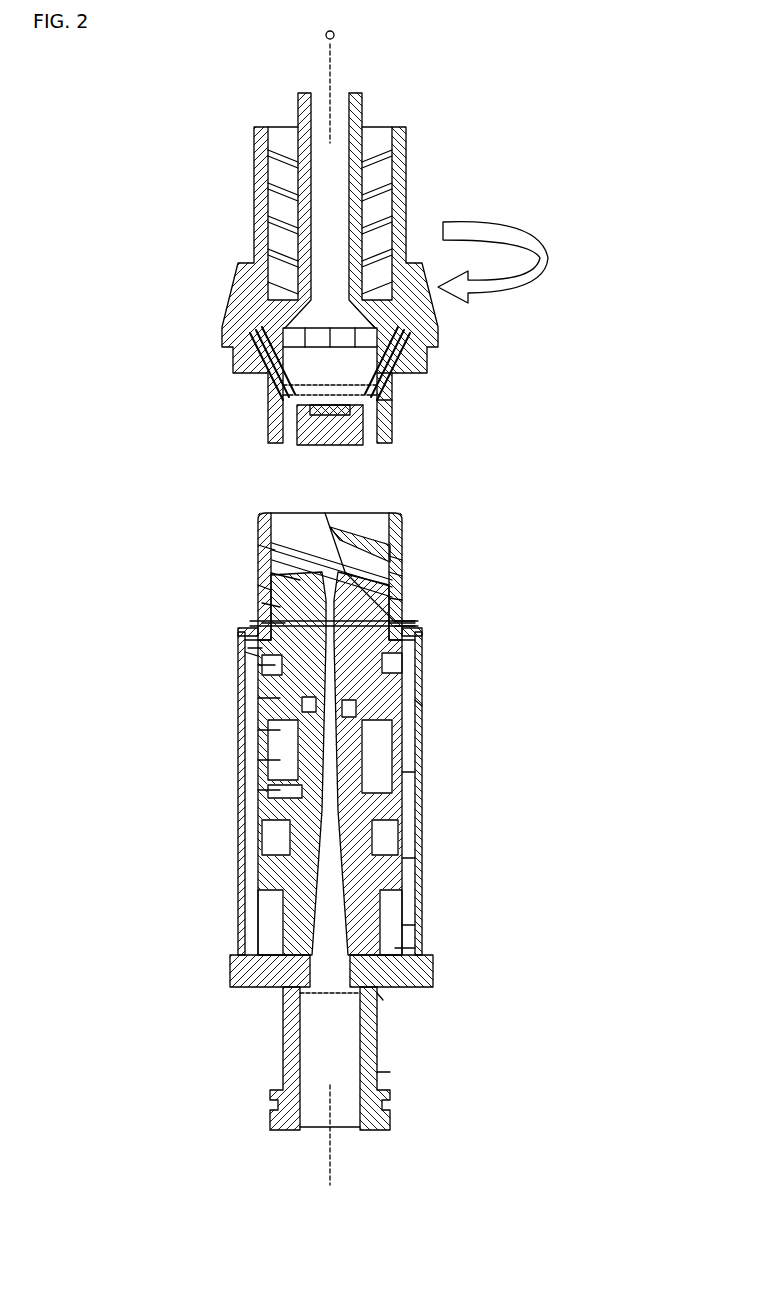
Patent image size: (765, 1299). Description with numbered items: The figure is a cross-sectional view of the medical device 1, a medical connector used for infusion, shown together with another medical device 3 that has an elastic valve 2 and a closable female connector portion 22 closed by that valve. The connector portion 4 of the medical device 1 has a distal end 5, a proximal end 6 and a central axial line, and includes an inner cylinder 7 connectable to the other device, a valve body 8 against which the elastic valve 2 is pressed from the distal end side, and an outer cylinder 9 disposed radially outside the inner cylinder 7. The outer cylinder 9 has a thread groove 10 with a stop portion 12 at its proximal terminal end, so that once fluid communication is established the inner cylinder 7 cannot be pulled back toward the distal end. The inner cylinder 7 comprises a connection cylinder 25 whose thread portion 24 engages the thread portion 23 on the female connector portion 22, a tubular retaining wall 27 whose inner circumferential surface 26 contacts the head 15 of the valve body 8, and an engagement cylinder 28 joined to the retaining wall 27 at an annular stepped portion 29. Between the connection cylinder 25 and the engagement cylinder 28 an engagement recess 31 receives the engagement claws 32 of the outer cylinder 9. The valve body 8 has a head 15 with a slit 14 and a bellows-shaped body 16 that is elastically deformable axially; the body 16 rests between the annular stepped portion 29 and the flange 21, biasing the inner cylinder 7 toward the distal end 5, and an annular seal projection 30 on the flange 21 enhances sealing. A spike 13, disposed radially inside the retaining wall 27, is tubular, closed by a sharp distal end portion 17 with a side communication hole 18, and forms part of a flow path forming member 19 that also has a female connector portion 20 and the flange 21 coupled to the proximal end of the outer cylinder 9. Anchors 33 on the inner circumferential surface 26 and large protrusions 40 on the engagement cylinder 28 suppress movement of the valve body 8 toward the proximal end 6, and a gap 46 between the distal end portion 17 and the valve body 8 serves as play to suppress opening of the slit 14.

The medical device 1 is at (563, 673).
The elastic valve 2 is at (360, 447).
The another medical device 3 is at (500, 179).
The connector portion 4 is at (432, 649).
The distal end 5 is at (380, 516).
The proximal end 6 is at (412, 947).
The inner cylinder 7 is at (408, 573).
The valve body 8 is at (402, 597).
The outer cylinder 9 is at (428, 829).
The thread groove 10 is at (420, 771).
The stop portion 12 is at (420, 857).
The spike 13 is at (262, 759).
The slit 14 is at (300, 550).
The head 15 is at (258, 587).
The body 16 is at (262, 789).
The distal end portion 17 is at (272, 622).
The communication hole 18 is at (262, 664).
The flow path forming member 19 is at (378, 1009).
The female connector portion 20 is at (378, 1071).
The flange 21 is at (380, 999).
The female connector portion 22 is at (400, 427).
The thread portion 23 is at (380, 404).
The thread portion 24 is at (400, 557).
The connection cylinder 25 is at (258, 547).
The inner circumferential surface 26 is at (283, 572).
The retaining wall 27 is at (270, 604).
The engagement cylinder 28 is at (260, 729).
The annular stepped portion 29 is at (262, 697).
The annular seal projection 30 is at (420, 924).
The engagement recess 31 is at (255, 647).
The engagement claws 32 is at (248, 651).
The anchors 33 is at (398, 622).
The large protrusions 40 is at (420, 702).
The gap 46 is at (337, 565).